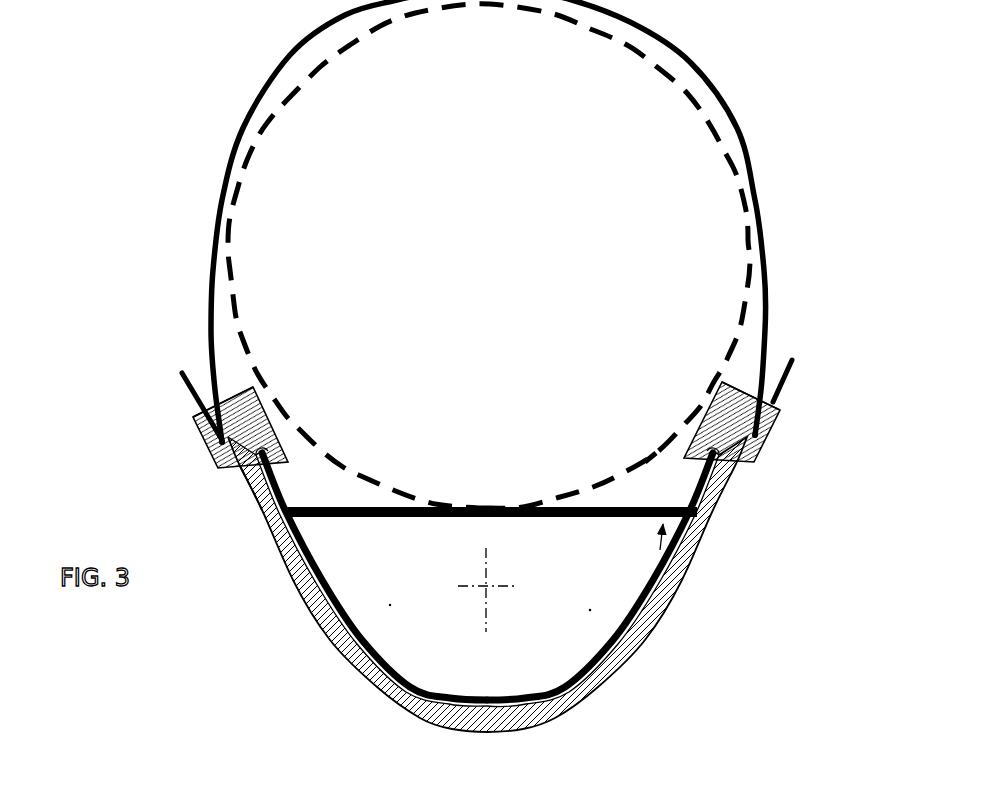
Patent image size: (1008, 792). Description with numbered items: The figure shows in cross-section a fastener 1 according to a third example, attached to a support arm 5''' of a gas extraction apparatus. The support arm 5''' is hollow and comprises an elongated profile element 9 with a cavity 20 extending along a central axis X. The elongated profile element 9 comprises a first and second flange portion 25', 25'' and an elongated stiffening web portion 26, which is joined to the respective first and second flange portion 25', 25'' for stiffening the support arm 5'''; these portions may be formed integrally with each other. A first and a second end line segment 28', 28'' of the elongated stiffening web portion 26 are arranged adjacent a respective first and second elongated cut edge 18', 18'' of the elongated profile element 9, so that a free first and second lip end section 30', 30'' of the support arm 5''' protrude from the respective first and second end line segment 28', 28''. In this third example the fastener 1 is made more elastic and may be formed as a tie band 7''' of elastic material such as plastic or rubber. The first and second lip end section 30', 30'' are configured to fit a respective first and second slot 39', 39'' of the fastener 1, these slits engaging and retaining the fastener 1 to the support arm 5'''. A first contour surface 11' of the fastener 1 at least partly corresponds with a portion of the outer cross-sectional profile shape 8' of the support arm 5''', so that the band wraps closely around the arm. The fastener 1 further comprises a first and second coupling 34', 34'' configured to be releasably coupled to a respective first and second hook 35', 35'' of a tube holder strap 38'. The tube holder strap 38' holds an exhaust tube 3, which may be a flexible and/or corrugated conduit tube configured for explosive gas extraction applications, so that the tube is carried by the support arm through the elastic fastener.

The fastener 1 is at (237, 603).
The exhaust tube 3 is at (743, 190).
The support arm 5''' is at (623, 448).
The tie band 7''' is at (617, 584).
The outer cross-sectional profile shape 8' is at (337, 577).
The elongated profile element 9 is at (493, 502).
The first contour surface 11' is at (342, 584).
The first elongated cut edge 18' is at (438, 584).
The second elongated cut edge 18'' is at (631, 577).
The cavity 20 is at (393, 550).
The first flange portion 25' is at (416, 600).
The second flange portion 25'' is at (572, 601).
The elongated stiffening web portion 26 is at (585, 518).
The first end line segment 28' is at (374, 576).
The second end line segment 28'' is at (620, 576).
The first lip end section 30' is at (319, 421).
The second lip end section 30'' is at (646, 414).
The first coupling 34' is at (183, 414).
The second coupling 34'' is at (774, 445).
The first hook 35' is at (181, 377).
The second hook 35'' is at (803, 385).
The tube holder strap 38' is at (515, 221).
The first slot 39' is at (214, 334).
The second slot 39'' is at (699, 326).
The central axis X is at (477, 595).